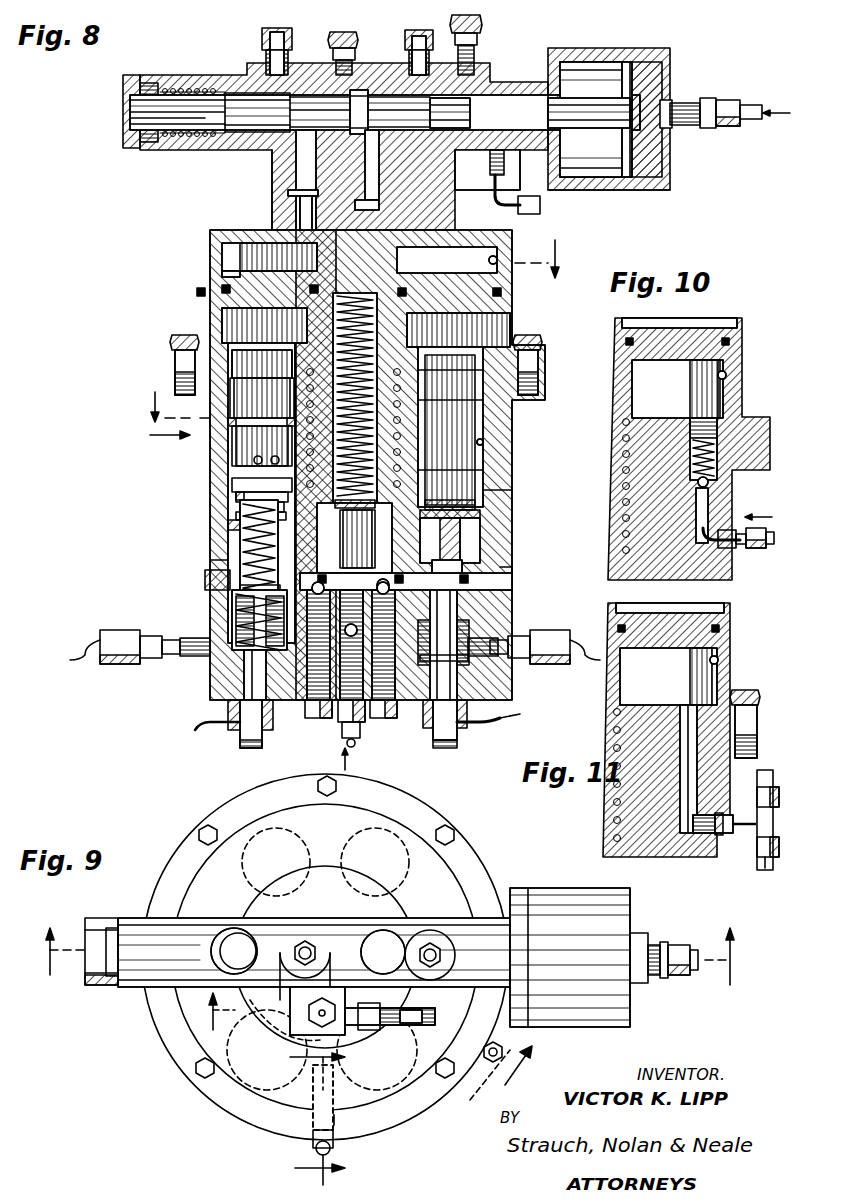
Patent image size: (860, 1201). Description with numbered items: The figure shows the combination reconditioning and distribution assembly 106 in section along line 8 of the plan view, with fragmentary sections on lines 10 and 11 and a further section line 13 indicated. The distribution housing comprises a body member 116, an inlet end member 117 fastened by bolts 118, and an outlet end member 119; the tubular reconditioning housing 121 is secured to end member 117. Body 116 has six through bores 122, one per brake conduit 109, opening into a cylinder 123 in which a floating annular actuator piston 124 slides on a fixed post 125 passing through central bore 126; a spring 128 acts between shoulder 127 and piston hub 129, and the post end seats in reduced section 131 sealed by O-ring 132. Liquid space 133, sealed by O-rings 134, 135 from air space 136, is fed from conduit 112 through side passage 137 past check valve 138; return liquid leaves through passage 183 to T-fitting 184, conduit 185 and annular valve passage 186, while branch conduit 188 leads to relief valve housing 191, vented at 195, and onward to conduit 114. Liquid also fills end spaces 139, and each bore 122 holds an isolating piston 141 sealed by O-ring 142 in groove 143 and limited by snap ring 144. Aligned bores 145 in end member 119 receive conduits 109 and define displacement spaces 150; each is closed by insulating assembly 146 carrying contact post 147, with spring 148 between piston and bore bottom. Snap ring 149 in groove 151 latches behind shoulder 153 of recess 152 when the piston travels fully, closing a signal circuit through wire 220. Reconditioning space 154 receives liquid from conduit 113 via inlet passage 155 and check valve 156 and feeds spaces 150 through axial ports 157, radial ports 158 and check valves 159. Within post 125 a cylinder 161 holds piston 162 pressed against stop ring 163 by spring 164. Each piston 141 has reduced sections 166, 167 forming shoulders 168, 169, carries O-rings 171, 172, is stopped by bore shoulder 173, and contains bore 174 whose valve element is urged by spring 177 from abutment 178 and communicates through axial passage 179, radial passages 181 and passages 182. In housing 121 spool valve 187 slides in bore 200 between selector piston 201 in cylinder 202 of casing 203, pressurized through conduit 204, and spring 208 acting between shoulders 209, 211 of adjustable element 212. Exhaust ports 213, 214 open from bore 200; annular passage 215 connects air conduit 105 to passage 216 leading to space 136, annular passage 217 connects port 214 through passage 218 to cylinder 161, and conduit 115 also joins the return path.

In FIG. 9, the section line 8— 8 is at (385, 956).
In FIG. 9, the section line 10— 10 is at (306, 1117).
In FIG. 9, the section line 11— 11 is at (367, 1046).
In FIG. 8, the section line 13- 13 is at (355, 331).
In FIG. 8, the inlet air conduit 105 is at (343, 8).
In FIG. 9, the inlet air conduit 105 is at (302, 940).
In FIG. 8, the combination reconditioning and distribution assembly 106 is at (154, 432).
In FIG. 8, the brake conduits 109 is at (586, 680).
In FIG. 10, the conduit 112 is at (770, 546).
In FIG. 9, the conduit 112 is at (332, 1150).
In FIG. 8, the conduit 113 is at (356, 742).
In FIG. 9, the conduit 114 is at (418, 1024).
In FIG. 8, the conduit 115 is at (462, 30).
In FIG. 9, the conduit 115 is at (428, 940).
In FIG. 8, the housing body member 116 is at (500, 468).
In FIG. 10, the housing body member 116 is at (722, 578).
In FIG. 11, the housing body member 116 is at (685, 855).
In FIG. 8, the inlet housing end member 117 is at (510, 306).
In FIG. 10, the inlet housing end member 117 is at (732, 340).
In FIG. 11, the inlet housing end member 117 is at (726, 636).
In FIG. 9, the inlet housing end member 117 is at (238, 1108).
In FIG. 8, the bolts 118 is at (532, 335).
In FIG. 11, the bolts 118 is at (735, 697).
In FIG. 9, the bolts 118 is at (202, 1078).
In FIG. 8, the outlet housing end member 119 is at (495, 694).
In FIG. 8, the tubular housing 121 is at (272, 162).
In FIG. 9, the tubular housing 121 is at (128, 930).
In FIG. 8, the cylindrical through bores 122 is at (484, 442).
In FIG. 9, the cylindrical through bores 122 is at (348, 835).
In FIG. 8, the cylinder 123 is at (500, 260).
In FIG. 10, the cylinder 123 is at (727, 376).
In FIG. 11, the cylinder 123 is at (718, 660).
In FIG. 8, the annular floating actuator piston 124 is at (225, 300).
In FIG. 10, the annular floating actuator piston 124 is at (728, 325).
In FIG. 11, the annular floating actuator piston 124 is at (720, 618).
In FIG. 8, the fixed post 125 is at (405, 448).
In FIG. 10, the fixed post 125 is at (612, 482).
In FIG. 11, the fixed post 125 is at (608, 848).
In FIG. 8, the central body bore 126 is at (405, 428).
In FIG. 8, the internal shoulder 127 is at (405, 480).
In FIG. 8, the coiled compression spring 128 is at (405, 410).
In FIG. 10, the coiled compression spring 128 is at (642, 420).
In FIG. 8, the hub 129 is at (405, 338).
In FIG. 8, the reduced bore section 131 is at (375, 500).
In FIG. 8, the O-ring 132 is at (354, 538).
In FIG. 8, the cylinder space 133 is at (230, 318).
In FIG. 10, the cylinder space 133 is at (720, 392).
In FIG. 11, the cylinder space 133 is at (700, 672).
In FIG. 8, the O-ring 134 is at (222, 282).
In FIG. 8, the O-ring 135 is at (400, 280).
In FIG. 8, the compressed air space 136 is at (235, 255).
In FIG. 10, the body side passage 137 is at (708, 505).
In FIG. 10, the unidirectional check valve unit 138 is at (708, 482).
In FIG. 8, the end spaces 139 is at (258, 352).
In FIG. 8, the isolating piston 141 is at (238, 436).
In FIG. 8, the O-ring 142 is at (228, 422).
In FIG. 8, the piston groove 143 is at (252, 420).
In FIG. 8, the annular snap ring 144 is at (462, 352).
In FIG. 8, the bores 145 is at (232, 605).
In FIG. 8, the insulating sleeve and washer assembly 146 is at (235, 700).
In FIG. 8, the rigid metal post 147 is at (248, 665).
In FIG. 8, the coiled compression spring 148 is at (236, 620).
In FIG. 8, the resilient snap ring abutment 149 is at (240, 588).
In FIG. 8, the liquid displacement space 150 is at (236, 530).
In FIG. 8, the groove 151 is at (208, 580).
In FIG. 8, the axially open recess 152 is at (470, 612).
In FIG. 8, the internal shoulder 153 is at (500, 585).
In FIG. 8, the hydraulic liquid reconditioning space 154 is at (373, 556).
In FIG. 8, the inlet passage 155 is at (322, 720).
In FIG. 8, the unidirectional check valve assembly 156 is at (355, 640).
In FIG. 8, the axial ports 157 is at (320, 580).
In FIG. 8, the radial ports 158 is at (390, 650).
In FIG. 8, the unidirectional check valve 159 is at (384, 578).
In FIG. 8, the cylinder 161 is at (380, 208).
In FIG. 8, the piston 162 is at (380, 190).
In FIG. 8, the fixed annular stop ring 163 is at (290, 196).
In FIG. 8, the compression spring 164 is at (375, 330).
In FIG. 8, the reduced cylindrical section 166 is at (234, 482).
In FIG. 8, the reduced cylindrical section 167 is at (228, 524).
In FIG. 8, the axially facing shoulder 168 is at (278, 460).
In FIG. 8, the axially facing shoulder 169 is at (238, 504).
In FIG. 8, the O-ring 171 is at (234, 494).
In FIG. 8, the O-ring 172 is at (234, 514).
In FIG. 8, the internal shoulder 173 is at (215, 556).
In FIG. 8, the central bore 174 is at (512, 548).
In FIG. 8, the compression spring 177 is at (450, 505).
In FIG. 8, the abutment 178 is at (485, 488).
In FIG. 8, the axial passage 179 is at (480, 535).
In FIG. 8, the radial passages 181 is at (482, 512).
In FIG. 8, the radial passages 182 is at (470, 567).
In FIG. 11, the body passage 183 is at (692, 790).
In FIG. 11, the T-fitting 184 is at (750, 826).
In FIG. 9, the T-fitting 184 is at (490, 1063).
In FIG. 8, the conduit 185 is at (541, 204).
In FIG. 11, the conduit 185 is at (762, 866).
In FIG. 8, the annular valve passage 186 is at (522, 100).
In FIG. 8, the spool valve 187 is at (600, 115).
In FIG. 11, the branch conduit 188 is at (765, 780).
In FIG. 9, the branch conduit 188 is at (394, 1028).
In FIG. 9, the relief valve housing 191 is at (295, 1017).
In FIG. 9, the vent 195 is at (323, 1010).
In FIG. 8, the longitudinal through bore 200 is at (300, 96).
In FIG. 8, the selector piston 201 is at (655, 88).
In FIG. 8, the cylinder 202 is at (592, 70).
In FIG. 8, the casing 203 is at (640, 184).
In FIG. 9, the casing 203 is at (628, 907).
In FIG. 8, the air pressure outlet conduit 204 is at (742, 110).
In FIG. 9, the air pressure outlet conduit 204 is at (680, 948).
In FIG. 8, the coiled compression spring 208 is at (190, 92).
In FIG. 8, the axial valve shoulder 209 is at (205, 120).
In FIG. 8, the internal shoulder 211 is at (140, 132).
In FIG. 8, the threaded adjustable element 212 is at (124, 88).
In FIG. 9, the threaded adjustable element 212 is at (88, 988).
In FIG. 8, the air exhaust port 213 is at (270, 30).
In FIG. 9, the air exhaust port 213 is at (216, 948).
In FIG. 8, the air exhaust port 214 is at (420, 36).
In FIG. 9, the air exhaust port 214 is at (378, 932).
In FIG. 8, the annular valve passage 215 is at (298, 172).
In FIG. 8, the housing passage 216 is at (300, 216).
In FIG. 8, the annular valve passage 217 is at (378, 100).
In FIG. 8, the housing passage 218 is at (415, 170).
In FIG. 8, the wire 220 is at (490, 728).